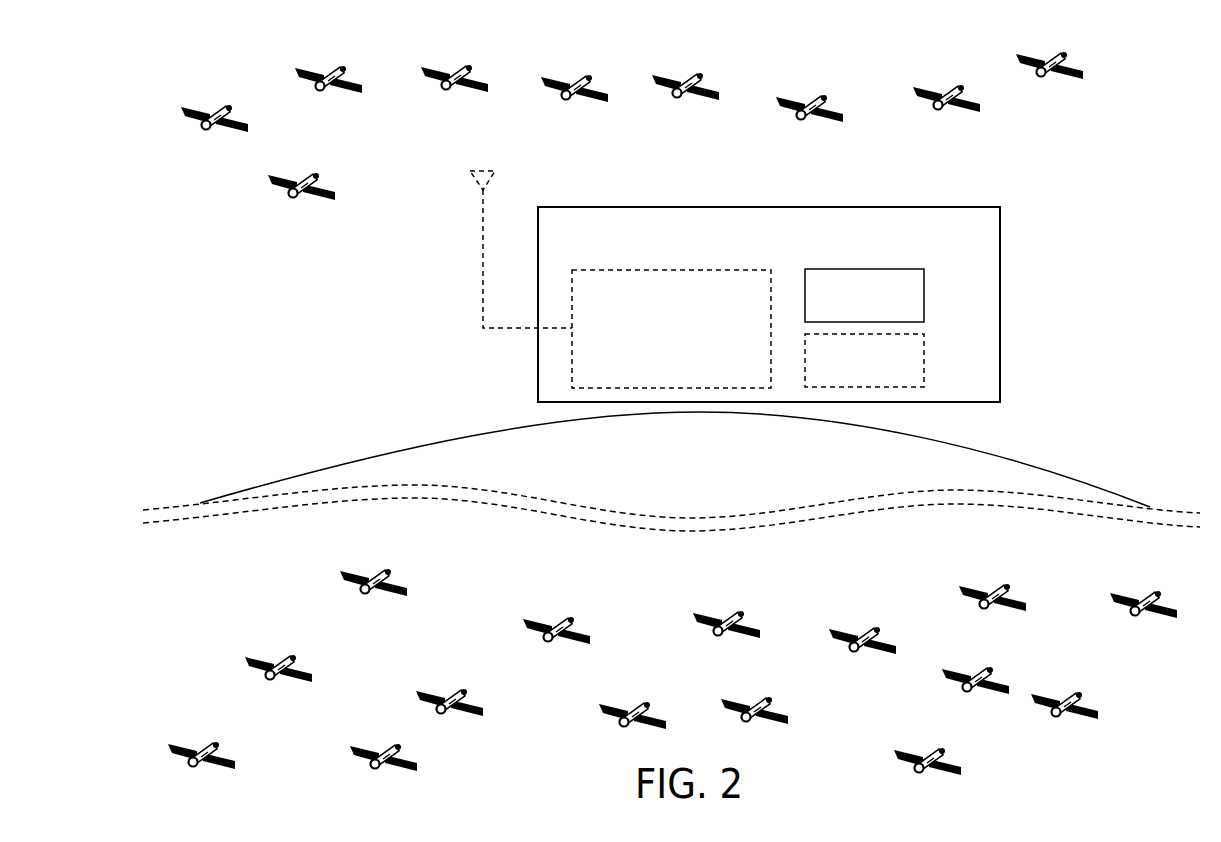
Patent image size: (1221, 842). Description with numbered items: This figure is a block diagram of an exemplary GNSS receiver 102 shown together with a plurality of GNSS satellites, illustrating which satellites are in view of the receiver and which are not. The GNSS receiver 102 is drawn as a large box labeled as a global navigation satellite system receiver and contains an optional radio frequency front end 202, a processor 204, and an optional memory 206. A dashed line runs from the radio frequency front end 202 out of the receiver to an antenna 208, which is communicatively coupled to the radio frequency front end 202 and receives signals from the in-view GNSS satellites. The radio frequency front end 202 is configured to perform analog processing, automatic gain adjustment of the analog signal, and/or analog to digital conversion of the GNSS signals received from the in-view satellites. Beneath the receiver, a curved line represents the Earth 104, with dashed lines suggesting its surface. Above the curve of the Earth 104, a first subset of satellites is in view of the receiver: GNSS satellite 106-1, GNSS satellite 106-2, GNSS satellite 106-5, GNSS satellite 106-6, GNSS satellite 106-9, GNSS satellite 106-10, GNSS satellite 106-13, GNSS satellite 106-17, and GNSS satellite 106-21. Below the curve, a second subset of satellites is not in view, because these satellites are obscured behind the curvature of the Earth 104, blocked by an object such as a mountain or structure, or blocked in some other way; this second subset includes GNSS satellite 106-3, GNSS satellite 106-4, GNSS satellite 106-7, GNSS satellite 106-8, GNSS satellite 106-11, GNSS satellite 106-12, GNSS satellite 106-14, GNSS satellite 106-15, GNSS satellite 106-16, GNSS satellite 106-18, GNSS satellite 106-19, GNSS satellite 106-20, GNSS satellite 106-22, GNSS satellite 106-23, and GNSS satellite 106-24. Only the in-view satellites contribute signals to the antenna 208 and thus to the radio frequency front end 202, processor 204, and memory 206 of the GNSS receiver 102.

The GNSS receiver 102 is at (753, 259).
The Earth 104 is at (390, 447).
The GNSS satellite 106-1 is at (312, 172).
The GNSS satellite 106-2 is at (463, 65).
The GNSS satellite 106-3 is at (983, 668).
The GNSS satellite 106-4 is at (732, 610).
The GNSS satellite 106-5 is at (583, 75).
The GNSS satellite 106-6 is at (226, 107).
The GNSS satellite 106-7 is at (391, 744).
The GNSS satellite 106-8 is at (765, 698).
The GNSS satellite 106-9 is at (818, 96).
The GNSS satellite 106-10 is at (343, 67).
The GNSS satellite 106-11 is at (1006, 585).
The GNSS satellite 106-12 is at (644, 703).
The GNSS satellite 106-13 is at (699, 74).
The GNSS satellite 106-14 is at (1159, 592).
The GNSS satellite 106-15 is at (878, 628).
The GNSS satellite 106-16 is at (215, 743).
The GNSS satellite 106-17 is at (1064, 53).
The GNSS satellite 106-18 is at (1077, 692).
The GNSS satellite 106-19 is at (465, 690).
The GNSS satellite 106-20 is at (293, 657).
The GNSS satellite 106-21 is at (961, 85).
The GNSS satellite 106-22 is at (939, 749).
The GNSS satellite 106-23 is at (570, 616).
The GNSS satellite 106-24 is at (388, 571).
The radio frequency front end 202 is at (656, 356).
The processor 204 is at (849, 316).
The memory 206 is at (849, 382).
The antenna 208 is at (474, 181).